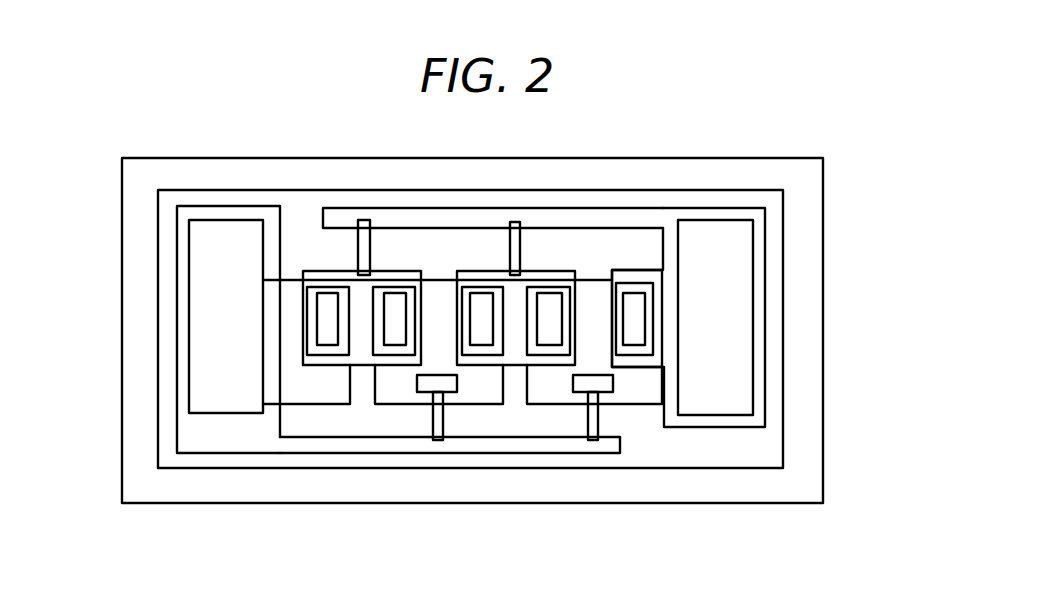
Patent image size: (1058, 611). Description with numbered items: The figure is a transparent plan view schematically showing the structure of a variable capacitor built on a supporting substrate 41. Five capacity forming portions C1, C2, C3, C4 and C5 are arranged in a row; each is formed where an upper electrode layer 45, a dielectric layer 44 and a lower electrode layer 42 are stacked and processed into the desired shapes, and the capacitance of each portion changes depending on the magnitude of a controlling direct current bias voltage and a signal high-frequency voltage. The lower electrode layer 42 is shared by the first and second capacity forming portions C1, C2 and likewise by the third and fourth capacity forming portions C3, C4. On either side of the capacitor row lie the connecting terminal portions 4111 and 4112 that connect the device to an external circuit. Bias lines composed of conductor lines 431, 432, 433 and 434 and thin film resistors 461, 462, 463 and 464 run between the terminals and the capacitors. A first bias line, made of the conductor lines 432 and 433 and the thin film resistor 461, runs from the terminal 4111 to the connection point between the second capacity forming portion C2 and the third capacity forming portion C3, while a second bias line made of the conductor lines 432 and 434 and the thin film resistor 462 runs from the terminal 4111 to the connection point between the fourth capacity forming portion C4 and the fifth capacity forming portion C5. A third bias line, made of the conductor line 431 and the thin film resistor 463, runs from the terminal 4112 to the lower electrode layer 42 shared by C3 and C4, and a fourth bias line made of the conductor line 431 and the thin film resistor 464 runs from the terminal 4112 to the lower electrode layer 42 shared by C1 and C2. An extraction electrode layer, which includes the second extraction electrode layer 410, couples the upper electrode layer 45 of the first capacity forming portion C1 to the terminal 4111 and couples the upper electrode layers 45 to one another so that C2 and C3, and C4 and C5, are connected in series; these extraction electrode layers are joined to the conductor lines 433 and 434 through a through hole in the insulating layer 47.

The supporting substrate 41 is at (815, 184).
The lower electrode layer 42 is at (573, 274).
The connecting terminal portion 4111 is at (205, 335).
The connecting terminal portion 4112 is at (753, 402).
The conductor line 431 is at (670, 217).
The conductor line 432 is at (358, 440).
The conductor line 433 is at (447, 382).
The conductor line 434 is at (603, 390).
The dielectric layer 44 is at (614, 312).
The upper electrode layer 45 is at (640, 337).
The insulating layer 47 is at (770, 452).
The second extraction electrode layer 410 is at (637, 395).
The thin film resistor 461 is at (440, 420).
The thin film resistor 462 is at (590, 427).
The thin film resistor 463 is at (517, 228).
The thin film resistor 464 is at (362, 242).
The first capacity forming portion C1 is at (328, 332).
The second capacity forming portion C2 is at (394, 304).
The third capacity forming portion C3 is at (477, 304).
The fourth capacity forming portion C4 is at (547, 303).
The fifth capacity forming portion C5 is at (632, 318).